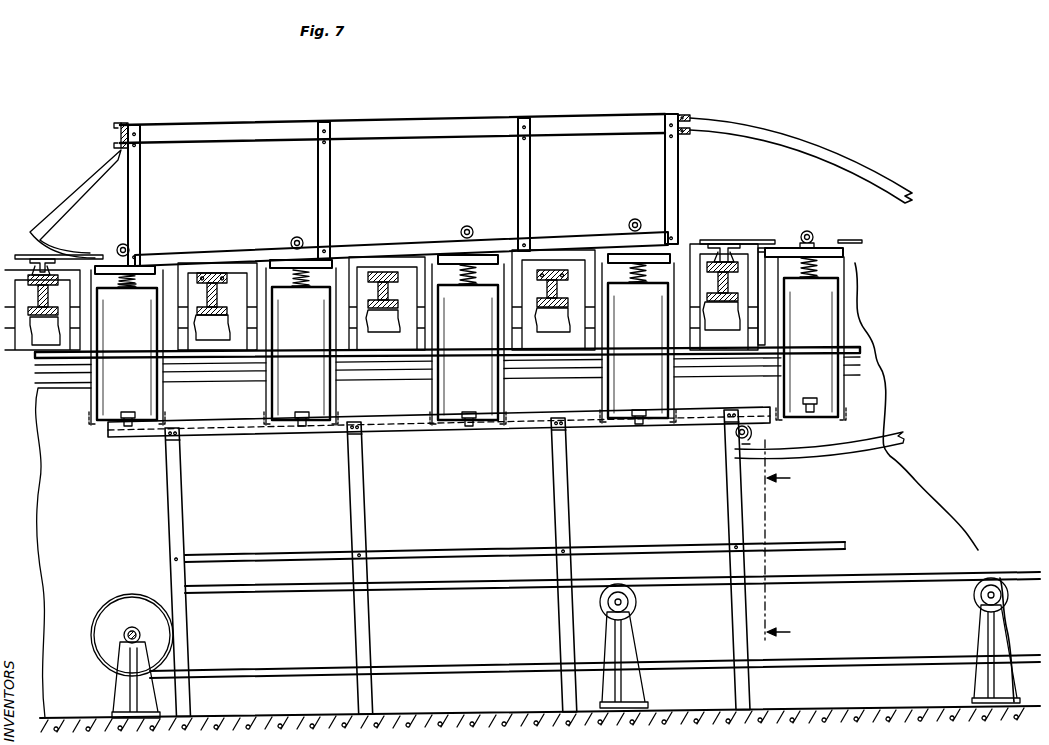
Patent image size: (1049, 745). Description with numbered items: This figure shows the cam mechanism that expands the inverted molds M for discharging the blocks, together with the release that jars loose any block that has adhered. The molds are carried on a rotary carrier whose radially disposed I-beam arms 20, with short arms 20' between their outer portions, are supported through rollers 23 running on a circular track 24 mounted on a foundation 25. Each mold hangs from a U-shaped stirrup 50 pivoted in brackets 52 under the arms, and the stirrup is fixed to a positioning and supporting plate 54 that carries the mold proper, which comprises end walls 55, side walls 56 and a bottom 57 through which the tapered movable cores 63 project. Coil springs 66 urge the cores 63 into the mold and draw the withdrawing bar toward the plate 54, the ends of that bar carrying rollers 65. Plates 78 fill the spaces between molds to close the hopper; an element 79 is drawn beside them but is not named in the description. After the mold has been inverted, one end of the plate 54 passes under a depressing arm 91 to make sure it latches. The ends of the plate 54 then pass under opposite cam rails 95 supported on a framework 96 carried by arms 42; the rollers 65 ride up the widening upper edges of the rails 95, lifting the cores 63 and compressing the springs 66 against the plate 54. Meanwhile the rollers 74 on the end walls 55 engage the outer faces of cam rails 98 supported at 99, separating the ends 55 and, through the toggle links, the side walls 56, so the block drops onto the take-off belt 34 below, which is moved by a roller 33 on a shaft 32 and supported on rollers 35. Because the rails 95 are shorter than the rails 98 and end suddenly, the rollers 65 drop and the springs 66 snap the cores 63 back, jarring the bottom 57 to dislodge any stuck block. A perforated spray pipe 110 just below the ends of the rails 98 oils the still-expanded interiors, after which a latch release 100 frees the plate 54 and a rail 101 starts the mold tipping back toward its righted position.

The radially disposed arms 20 is at (379, 288).
The short arms 20' is at (393, 292).
The rollers 23 is at (788, 540).
The circular track 24 is at (50, 378).
The foundation 25 is at (48, 440).
The shaft 32 is at (124, 638).
The roller 33 is at (110, 612).
The take-off belt 34 is at (486, 584).
The rollers 35 is at (638, 602).
The arms 42 is at (118, 124).
The U-shaped stirrup 50 is at (78, 290).
The brackets 52 is at (32, 340).
The positioning and supporting plate 54 is at (148, 266).
The end walls 55 is at (280, 400).
The side walls 56 is at (434, 388).
The bottom 57 is at (288, 287).
The movable cores 63 is at (312, 282).
The rollers 65 is at (123, 244).
The coil springs 66 is at (136, 286).
The rollers 74 is at (126, 428).
The plates 78 is at (25, 255).
The bracket 79 is at (719, 240).
The depressing arm 91 is at (50, 230).
The cam rails 95 is at (192, 259).
The framework 96 is at (140, 177).
The cam rails 98 is at (200, 432).
The supports 99 is at (171, 492).
The latch release 100 is at (788, 148).
The rail 101 is at (842, 444).
The perforated spray pipe 110 is at (750, 436).